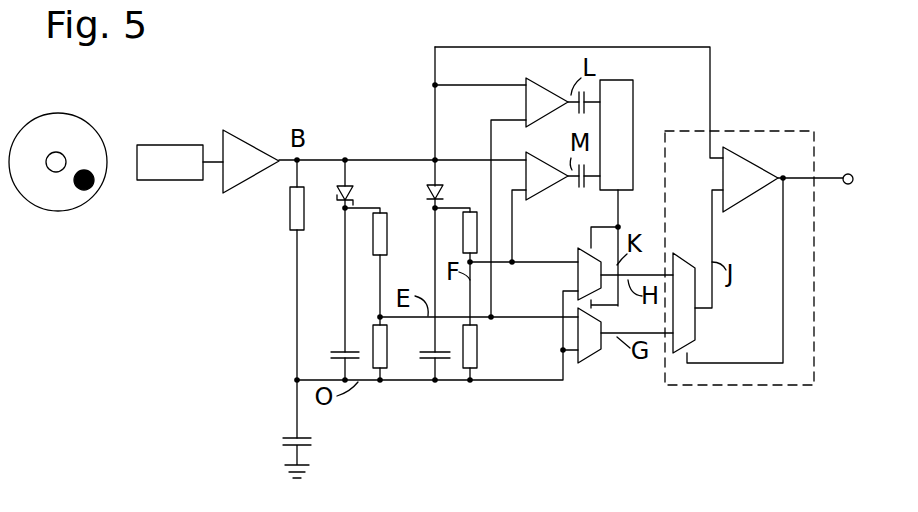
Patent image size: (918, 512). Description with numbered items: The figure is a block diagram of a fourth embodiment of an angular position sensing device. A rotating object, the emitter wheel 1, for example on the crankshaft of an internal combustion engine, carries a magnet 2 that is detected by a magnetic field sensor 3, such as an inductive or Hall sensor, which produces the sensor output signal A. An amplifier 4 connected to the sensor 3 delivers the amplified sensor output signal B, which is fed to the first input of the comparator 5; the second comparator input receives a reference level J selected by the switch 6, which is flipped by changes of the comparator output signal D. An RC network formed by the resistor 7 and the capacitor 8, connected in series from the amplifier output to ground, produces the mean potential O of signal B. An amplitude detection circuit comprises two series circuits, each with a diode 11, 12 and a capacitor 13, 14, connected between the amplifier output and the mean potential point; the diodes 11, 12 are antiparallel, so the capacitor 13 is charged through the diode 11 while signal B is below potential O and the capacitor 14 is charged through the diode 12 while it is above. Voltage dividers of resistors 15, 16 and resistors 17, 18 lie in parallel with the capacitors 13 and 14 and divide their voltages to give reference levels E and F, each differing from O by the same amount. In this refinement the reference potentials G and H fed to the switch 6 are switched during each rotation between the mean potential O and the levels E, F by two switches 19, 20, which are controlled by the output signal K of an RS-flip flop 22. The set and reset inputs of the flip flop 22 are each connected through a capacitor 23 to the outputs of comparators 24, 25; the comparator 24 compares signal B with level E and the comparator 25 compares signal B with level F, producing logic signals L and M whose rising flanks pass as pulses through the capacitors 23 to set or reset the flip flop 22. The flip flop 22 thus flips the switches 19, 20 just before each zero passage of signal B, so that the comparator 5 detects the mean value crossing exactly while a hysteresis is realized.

The emitter wheel 1 is at (25, 186).
The magnet 2 is at (93, 195).
The magnetic field sensor 3 is at (158, 157).
The amplifier 4 is at (252, 158).
The comparator 5 is at (743, 175).
The switch 6 is at (688, 282).
The resistor 7 is at (292, 212).
The capacitor 8 is at (285, 436).
The diode 11 is at (352, 196).
The diode 12 is at (454, 184).
The capacitor 13 is at (333, 357).
The capacitor 14 is at (425, 360).
The resistor 15 is at (386, 238).
The resistor 16 is at (380, 345).
The resistor 17 is at (467, 245).
The resistor 18 is at (478, 357).
The switch 19 is at (577, 260).
The switch 20 is at (590, 352).
The RS-flip flop 22 is at (620, 125).
The capacitor 23 is at (573, 105).
The comparator 24 is at (535, 100).
The comparator 25 is at (533, 183).